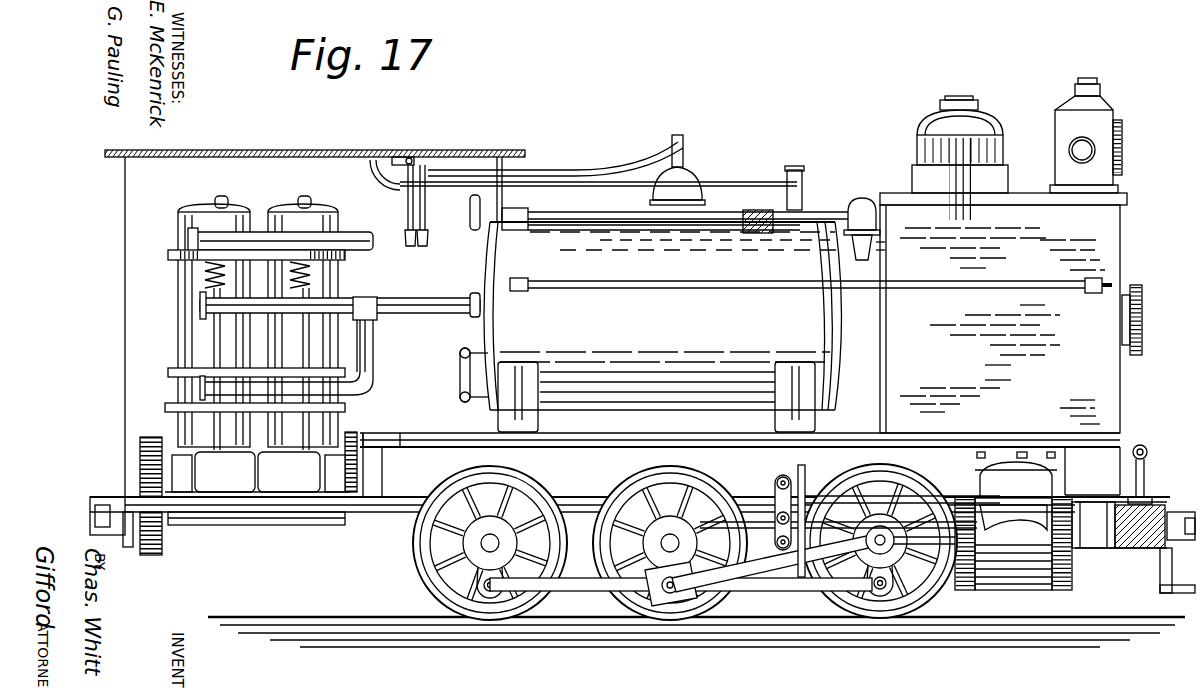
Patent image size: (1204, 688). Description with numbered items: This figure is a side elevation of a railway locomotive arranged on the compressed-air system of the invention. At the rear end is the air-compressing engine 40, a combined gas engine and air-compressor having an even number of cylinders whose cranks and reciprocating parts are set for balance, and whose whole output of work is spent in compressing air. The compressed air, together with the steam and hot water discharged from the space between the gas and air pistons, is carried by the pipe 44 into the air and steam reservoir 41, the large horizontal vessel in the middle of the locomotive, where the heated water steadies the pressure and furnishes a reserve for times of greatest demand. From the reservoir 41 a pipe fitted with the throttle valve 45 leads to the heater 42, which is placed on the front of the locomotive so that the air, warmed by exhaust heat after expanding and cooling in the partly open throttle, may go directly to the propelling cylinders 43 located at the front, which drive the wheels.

The air-compressing engine 40 is at (190, 241).
The air and steam reservoir 41 is at (570, 248).
The heater 42 is at (1011, 255).
The propelling cylinders 43 is at (1016, 582).
The pipe 44 is at (423, 312).
The throttle valve 45 is at (866, 200).